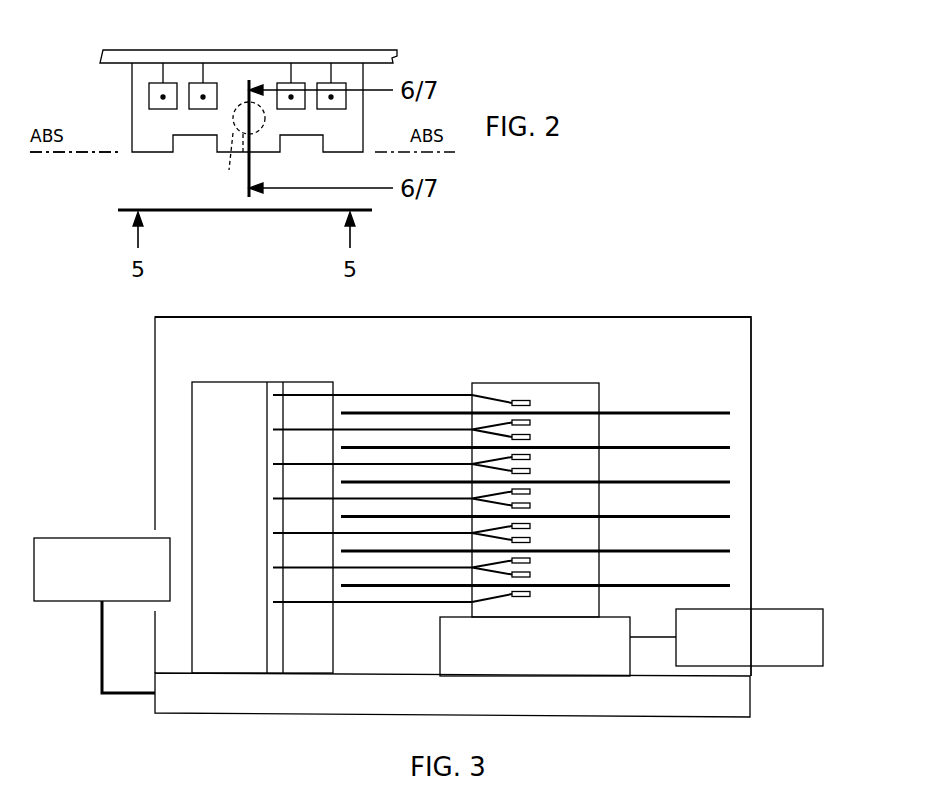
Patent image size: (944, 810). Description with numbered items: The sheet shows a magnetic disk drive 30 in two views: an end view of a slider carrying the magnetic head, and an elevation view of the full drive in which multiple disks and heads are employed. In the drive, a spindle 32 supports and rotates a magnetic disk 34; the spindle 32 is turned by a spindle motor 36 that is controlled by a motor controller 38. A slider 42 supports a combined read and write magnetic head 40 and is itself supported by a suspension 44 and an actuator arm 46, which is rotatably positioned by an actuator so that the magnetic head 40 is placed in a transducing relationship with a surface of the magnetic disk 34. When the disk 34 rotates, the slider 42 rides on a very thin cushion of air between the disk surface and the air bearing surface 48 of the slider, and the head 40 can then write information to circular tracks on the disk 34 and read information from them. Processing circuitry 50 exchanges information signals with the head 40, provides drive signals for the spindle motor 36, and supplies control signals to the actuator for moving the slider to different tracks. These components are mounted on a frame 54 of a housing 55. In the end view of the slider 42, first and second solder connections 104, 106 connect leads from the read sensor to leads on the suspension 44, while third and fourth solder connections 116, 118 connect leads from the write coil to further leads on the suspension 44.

In FIG. 3, the magnetic disk drive 30 is at (650, 384).
In FIG. 3, the spindle 32 is at (588, 383).
In FIG. 3, the magnetic disk 34 is at (773, 569).
In FIG. 3, the spindle motor 36 is at (523, 657).
In FIG. 3, the motor controller 38 is at (783, 666).
In FIG. 2, the magnetic head 40 is at (229, 172).
In FIG. 2, the slider 42 is at (132, 95).
In FIG. 3, the slider 42 is at (530, 422).
In FIG. 3, the suspension 44 is at (508, 437).
In FIG. 3, the actuator arm 46 is at (440, 430).
In FIG. 2, the air bearing surface 48 is at (53, 153).
In FIG. 3, the processing circuitry 50 is at (77, 538).
In FIG. 3, the frame 54 is at (205, 713).
In FIG. 3, the housing 55 is at (693, 318).
In FIG. 2, the first solder connection 104 is at (148, 88).
In FIG. 2, the second solder connection 106 is at (317, 85).
In FIG. 2, the third solder connection 116 is at (191, 89).
In FIG. 2, the fourth solder connection 118 is at (277, 85).